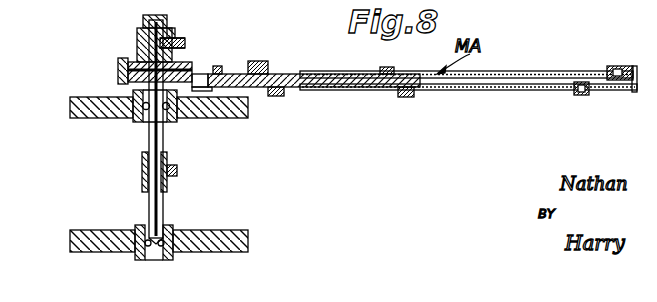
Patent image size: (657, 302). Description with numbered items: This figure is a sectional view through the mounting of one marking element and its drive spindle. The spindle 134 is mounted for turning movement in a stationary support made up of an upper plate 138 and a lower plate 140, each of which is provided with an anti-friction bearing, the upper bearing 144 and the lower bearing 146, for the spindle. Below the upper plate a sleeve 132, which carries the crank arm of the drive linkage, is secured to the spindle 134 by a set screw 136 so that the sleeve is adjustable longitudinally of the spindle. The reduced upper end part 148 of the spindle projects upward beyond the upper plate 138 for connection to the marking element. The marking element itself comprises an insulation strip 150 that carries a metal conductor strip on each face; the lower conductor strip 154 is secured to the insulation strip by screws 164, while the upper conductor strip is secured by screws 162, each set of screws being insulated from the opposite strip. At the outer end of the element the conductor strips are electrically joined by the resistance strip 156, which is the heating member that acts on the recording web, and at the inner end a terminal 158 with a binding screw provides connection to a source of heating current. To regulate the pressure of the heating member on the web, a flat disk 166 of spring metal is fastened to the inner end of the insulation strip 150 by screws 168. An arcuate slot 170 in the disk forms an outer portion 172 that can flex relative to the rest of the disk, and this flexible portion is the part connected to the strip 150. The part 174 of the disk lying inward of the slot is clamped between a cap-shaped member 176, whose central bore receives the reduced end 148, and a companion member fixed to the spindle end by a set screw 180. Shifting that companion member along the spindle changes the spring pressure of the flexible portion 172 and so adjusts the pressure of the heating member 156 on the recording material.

The sleeve 132 is at (142, 172).
The spindle 134 is at (164, 206).
The set screw 136 is at (178, 170).
The upper plate 138 is at (82, 97).
The lower plate 140 is at (90, 252).
The anti-friction bearing 144 is at (172, 120).
The anti-friction bearing 146 is at (156, 254).
The reduced upper end part 148 is at (178, 52).
The insulation strip 150 is at (310, 73).
The conductor strip 154 is at (460, 91).
The resistance strip 156 is at (594, 93).
The terminal 158 is at (495, 72).
The screws 162 is at (262, 63).
The screws 164 is at (284, 93).
The flat disk 166 is at (176, 31).
The screws 168 is at (218, 66).
The arcuate slot 170 is at (145, 17).
The outer portion 172 is at (167, 18).
The part of the disk 174 is at (122, 60).
The cap member 176 is at (206, 90).
The set screw 180 is at (184, 41).